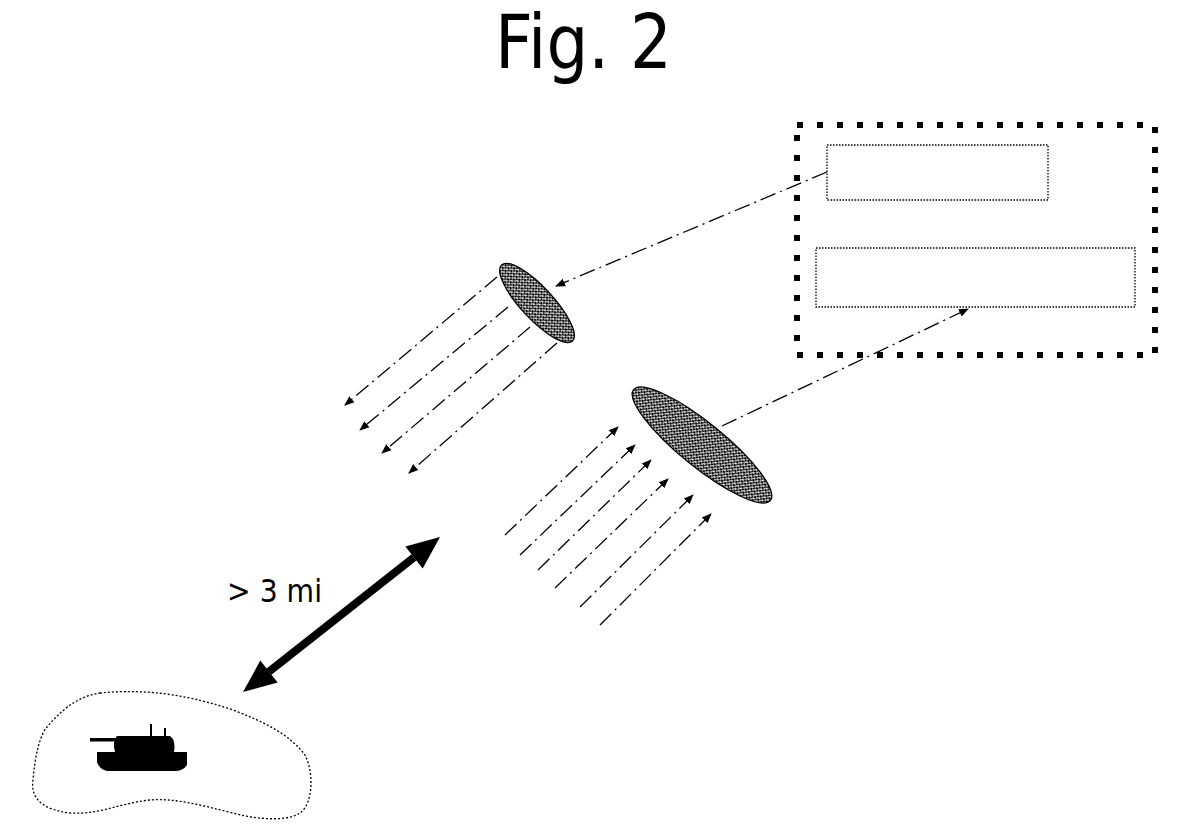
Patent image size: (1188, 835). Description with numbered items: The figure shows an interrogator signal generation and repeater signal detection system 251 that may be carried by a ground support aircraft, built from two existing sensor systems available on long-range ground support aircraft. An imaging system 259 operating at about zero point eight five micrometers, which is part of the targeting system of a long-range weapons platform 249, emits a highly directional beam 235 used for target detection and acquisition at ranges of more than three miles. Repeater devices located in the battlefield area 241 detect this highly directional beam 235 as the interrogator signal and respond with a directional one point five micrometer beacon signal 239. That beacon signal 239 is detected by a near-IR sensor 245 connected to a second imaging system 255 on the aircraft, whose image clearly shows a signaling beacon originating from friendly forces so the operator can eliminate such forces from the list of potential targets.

The highly directional beam 235 is at (405, 348).
The directional beacon signal 239 is at (662, 570).
The battlefield area 241 is at (307, 750).
The near-IR sensor 245 is at (770, 503).
The long-range weapons platform 249 is at (497, 267).
The interrogator signal generation and repeater signal detection system 251 is at (913, 360).
The second imaging system 255 is at (816, 268).
The imaging system 259 is at (827, 157).